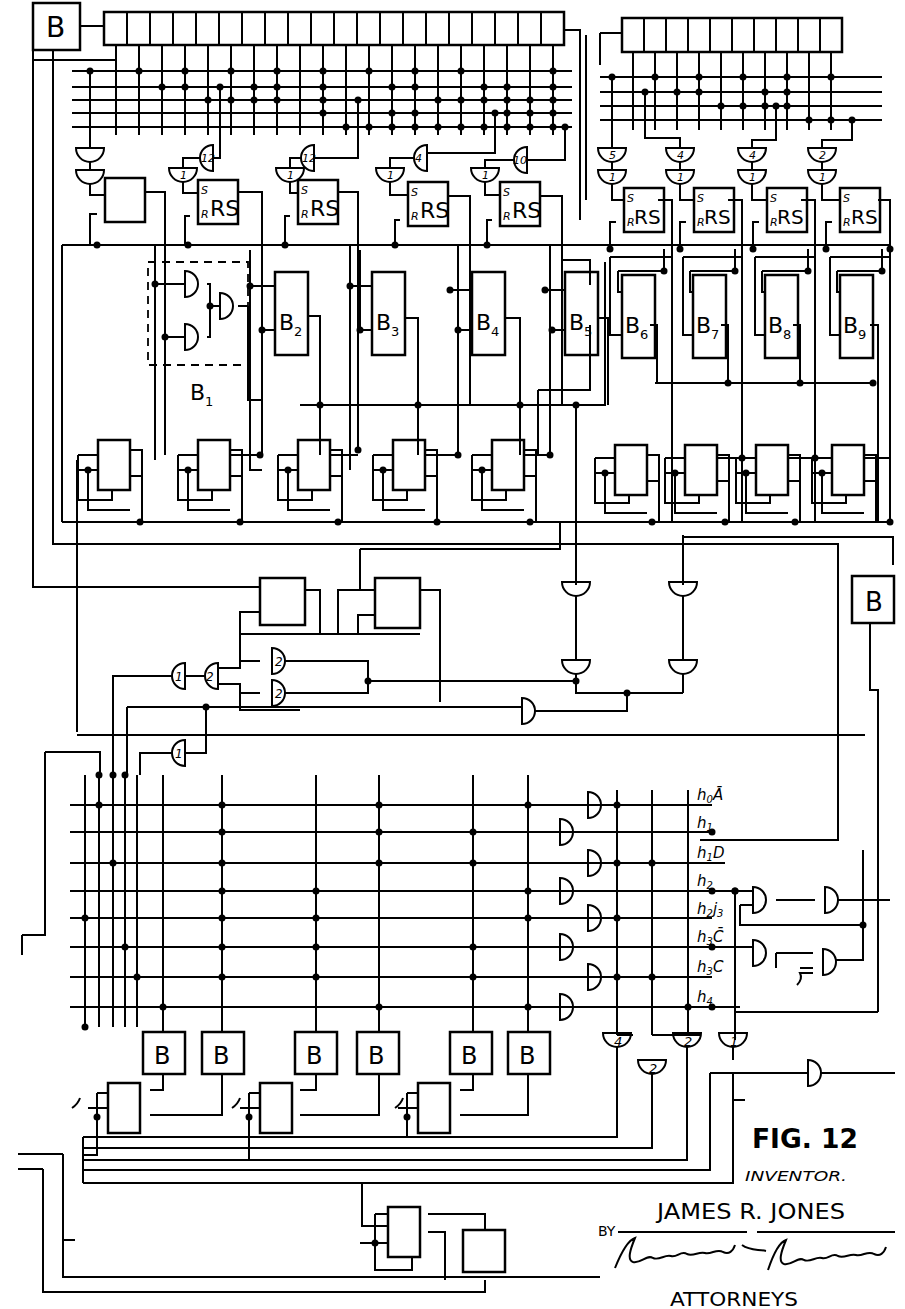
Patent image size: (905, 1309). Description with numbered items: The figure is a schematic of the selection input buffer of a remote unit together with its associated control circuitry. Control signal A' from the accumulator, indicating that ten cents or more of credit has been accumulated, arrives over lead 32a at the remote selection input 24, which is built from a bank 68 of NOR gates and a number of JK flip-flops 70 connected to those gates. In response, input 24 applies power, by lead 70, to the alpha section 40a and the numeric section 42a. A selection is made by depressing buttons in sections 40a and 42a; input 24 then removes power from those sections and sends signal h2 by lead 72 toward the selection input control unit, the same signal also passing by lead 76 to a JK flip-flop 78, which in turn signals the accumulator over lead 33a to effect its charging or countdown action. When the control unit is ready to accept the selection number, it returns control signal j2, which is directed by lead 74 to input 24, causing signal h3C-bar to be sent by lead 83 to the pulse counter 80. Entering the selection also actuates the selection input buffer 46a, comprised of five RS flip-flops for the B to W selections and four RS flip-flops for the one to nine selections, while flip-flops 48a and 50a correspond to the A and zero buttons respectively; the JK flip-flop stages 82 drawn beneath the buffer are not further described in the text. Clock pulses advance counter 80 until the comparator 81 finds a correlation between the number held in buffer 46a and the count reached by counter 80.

The alpha section 40a is at (560, 54).
The numeric section 42a is at (860, 40).
The selection input buffer 46a is at (93, 205).
The flip-flop 48a is at (261, 574).
The flip-flop 50a is at (420, 580).
The pulse counter 80 is at (96, 441).
The comparator 81 is at (143, 327).
The JK flip-flops 82 is at (130, 440).
The lead 83 is at (510, 706).
The remote selection input 24 is at (426, 796).
The bank of NOR gates 68 is at (563, 787).
The JK flip-flops 70 is at (138, 1125).
The lead 72 is at (847, 886).
The lead 74 is at (776, 1074).
The lead 76 is at (753, 1100).
The JK flip-flop 78 is at (430, 1207).
The lead 32a is at (30, 955).
The lead 33a is at (63, 1243).
The return control signal j2 is at (868, 1073).